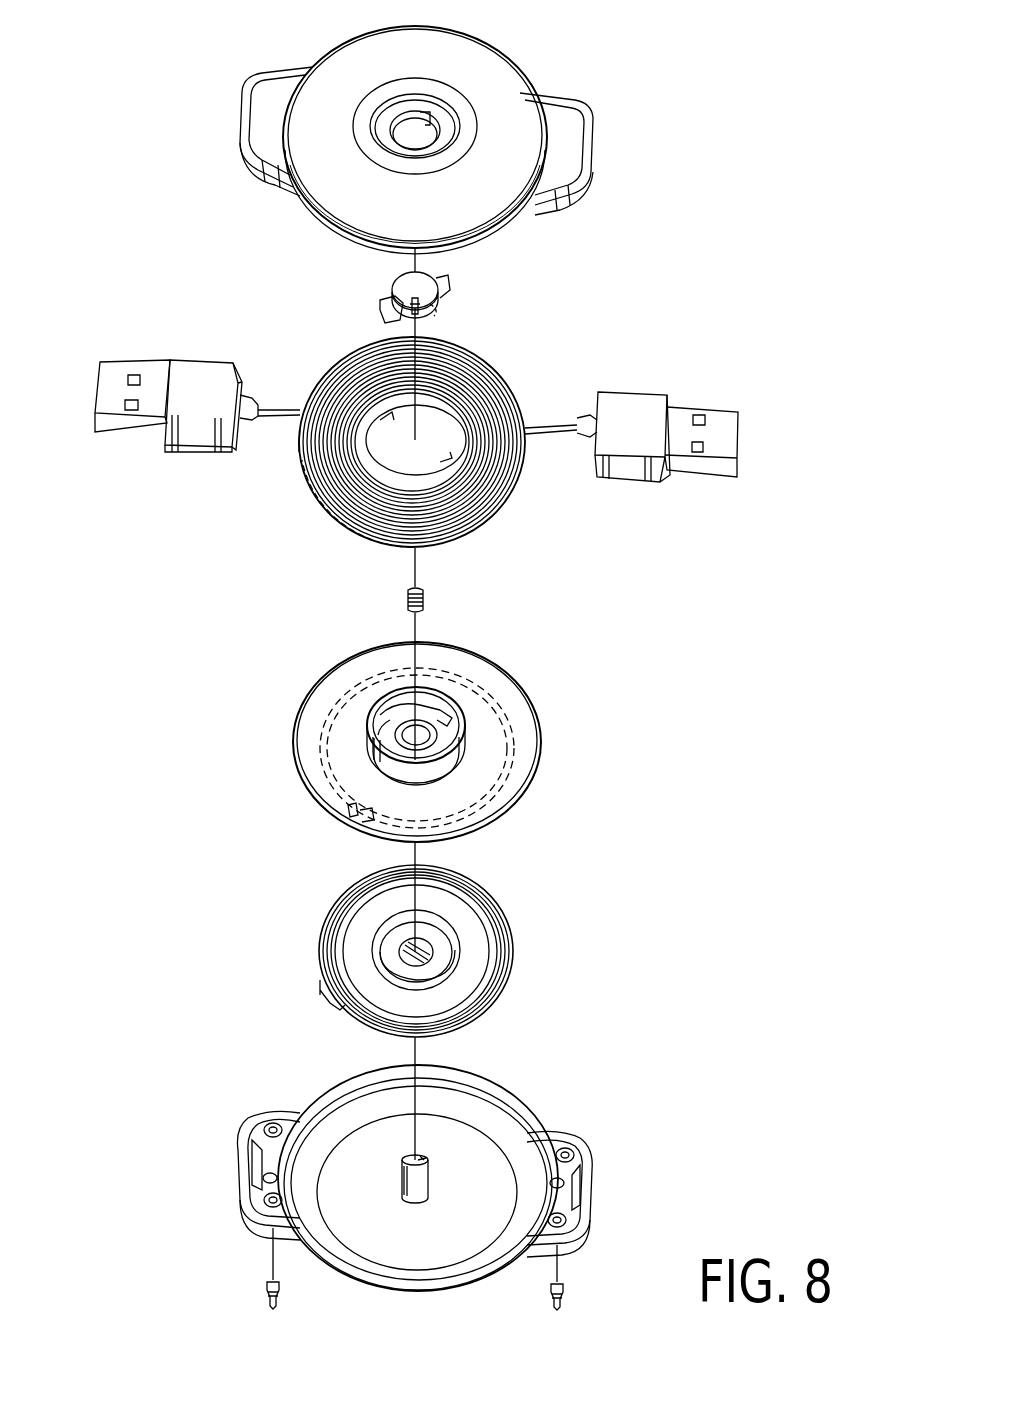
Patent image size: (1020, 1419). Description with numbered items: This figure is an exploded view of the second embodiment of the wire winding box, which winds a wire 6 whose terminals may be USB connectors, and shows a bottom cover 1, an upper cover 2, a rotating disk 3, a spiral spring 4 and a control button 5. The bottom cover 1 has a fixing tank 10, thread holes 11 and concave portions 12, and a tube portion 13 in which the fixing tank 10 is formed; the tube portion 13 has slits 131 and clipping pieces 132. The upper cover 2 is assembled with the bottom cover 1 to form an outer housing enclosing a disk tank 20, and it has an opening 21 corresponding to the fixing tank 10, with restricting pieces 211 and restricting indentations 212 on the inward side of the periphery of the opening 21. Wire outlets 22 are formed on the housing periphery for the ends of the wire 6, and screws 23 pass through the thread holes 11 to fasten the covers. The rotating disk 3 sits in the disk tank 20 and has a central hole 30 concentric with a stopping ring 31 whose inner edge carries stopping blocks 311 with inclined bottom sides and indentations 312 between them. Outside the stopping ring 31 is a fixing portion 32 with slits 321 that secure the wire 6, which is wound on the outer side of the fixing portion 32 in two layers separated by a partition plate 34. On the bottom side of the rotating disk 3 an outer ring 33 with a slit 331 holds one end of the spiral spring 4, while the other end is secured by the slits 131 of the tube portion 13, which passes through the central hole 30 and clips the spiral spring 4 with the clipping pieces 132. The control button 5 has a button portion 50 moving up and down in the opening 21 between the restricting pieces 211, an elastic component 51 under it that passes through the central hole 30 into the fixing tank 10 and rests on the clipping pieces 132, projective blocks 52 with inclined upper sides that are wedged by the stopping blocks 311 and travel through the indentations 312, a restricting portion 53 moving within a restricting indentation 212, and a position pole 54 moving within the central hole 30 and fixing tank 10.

The bottom cover 1 is at (460, 1290).
The fixing tank 10 is at (418, 1165).
The thread holes 11 is at (585, 1170).
The concave portions 12 is at (560, 1140).
The tube portion 13 is at (428, 1185).
The slits 131 is at (425, 1160).
The clipping pieces 132 is at (398, 1160).
The upper cover 2 is at (515, 115).
The disk tank 20 is at (330, 226).
The opening 21 is at (395, 120).
The restricting pieces 211 is at (410, 132).
The restricting indentations 212 is at (432, 128).
The wire outlets 22 is at (240, 120).
The screws 23 is at (565, 1292).
The rotating disk 3 is at (527, 750).
The central hole 30 is at (464, 718).
The stopping ring 31 is at (457, 720).
The stopping blocks 311 is at (368, 718).
The indentations 312 is at (452, 700).
The fixing portion 32 is at (392, 774).
The slits 321 is at (372, 757).
The outer ring 33 is at (505, 790).
The slit 331 is at (332, 812).
The partition plate 34 is at (300, 452).
The spiral spring 4 is at (512, 967).
The control button 5 is at (405, 279).
The button portion 50 is at (437, 281).
The elastic component 51 is at (424, 600).
The projective blocks 52 is at (378, 311).
The restricting portion 53 is at (402, 318).
The position pole 54 is at (434, 308).
The wire 6 is at (500, 510).